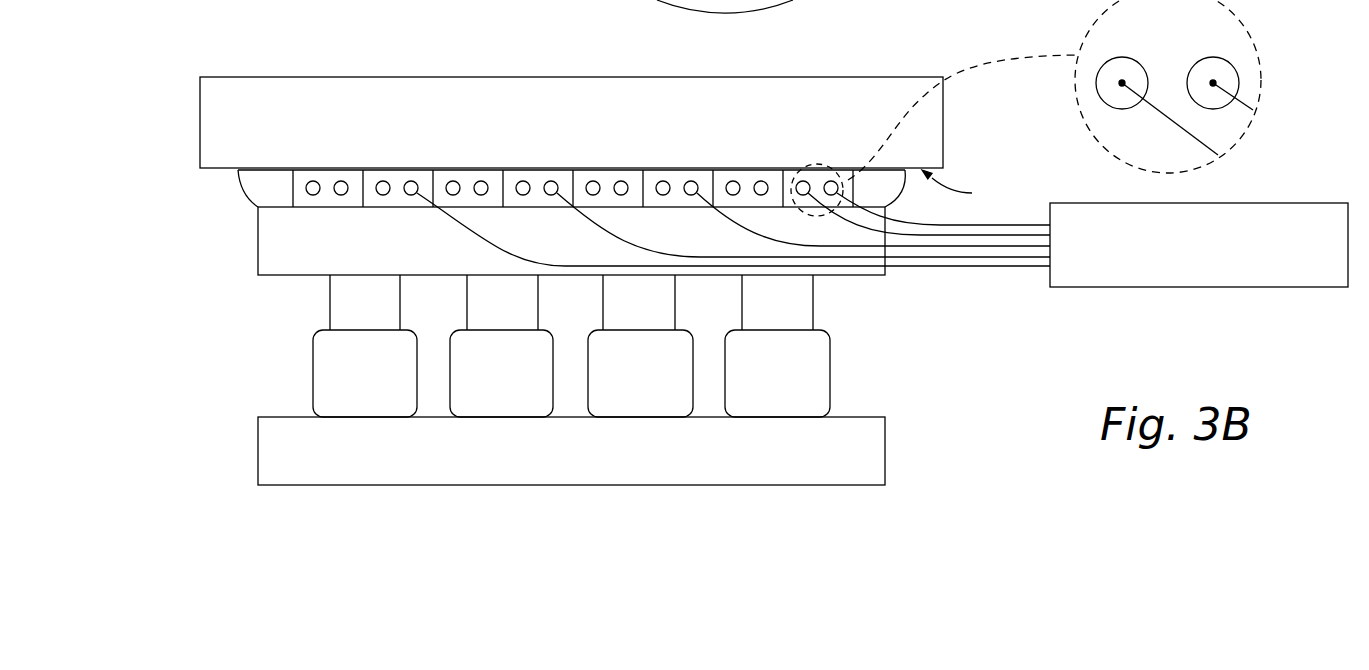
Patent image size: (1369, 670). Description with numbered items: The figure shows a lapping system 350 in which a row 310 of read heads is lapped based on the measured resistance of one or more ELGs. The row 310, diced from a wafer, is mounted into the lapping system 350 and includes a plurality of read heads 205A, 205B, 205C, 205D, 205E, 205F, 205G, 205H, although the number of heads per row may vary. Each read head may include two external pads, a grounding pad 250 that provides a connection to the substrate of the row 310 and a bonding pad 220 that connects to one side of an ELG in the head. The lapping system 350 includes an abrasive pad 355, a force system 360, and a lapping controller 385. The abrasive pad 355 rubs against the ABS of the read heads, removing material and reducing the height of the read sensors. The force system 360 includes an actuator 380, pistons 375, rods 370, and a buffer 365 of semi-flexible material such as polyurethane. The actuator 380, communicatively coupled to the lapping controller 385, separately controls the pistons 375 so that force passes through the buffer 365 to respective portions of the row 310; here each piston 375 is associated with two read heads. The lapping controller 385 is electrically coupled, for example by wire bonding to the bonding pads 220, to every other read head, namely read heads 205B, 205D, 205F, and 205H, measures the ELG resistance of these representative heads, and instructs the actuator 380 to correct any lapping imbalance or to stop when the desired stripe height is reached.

The lapping system 350 is at (260, 40).
The abrasive pad 355 is at (860, 77).
The row 310 is at (242, 180).
The read head 205A is at (363, 167).
The read head 205B is at (433, 167).
The read head 205C is at (503, 167).
The read head 205D is at (573, 167).
The read head 205E is at (643, 167).
The read head 205F is at (713, 167).
The read head 205G is at (783, 167).
The read head 205H is at (853, 167).
The grounding pad 250 is at (1122, 57).
The bonding pad 220 is at (1213, 57).
The lapping controller 385 is at (1272, 203).
The force system 360 is at (232, 207).
The buffer 365 is at (313, 276).
The rod 370 is at (348, 316).
The piston 375 is at (348, 380).
The actuator 380 is at (805, 486).